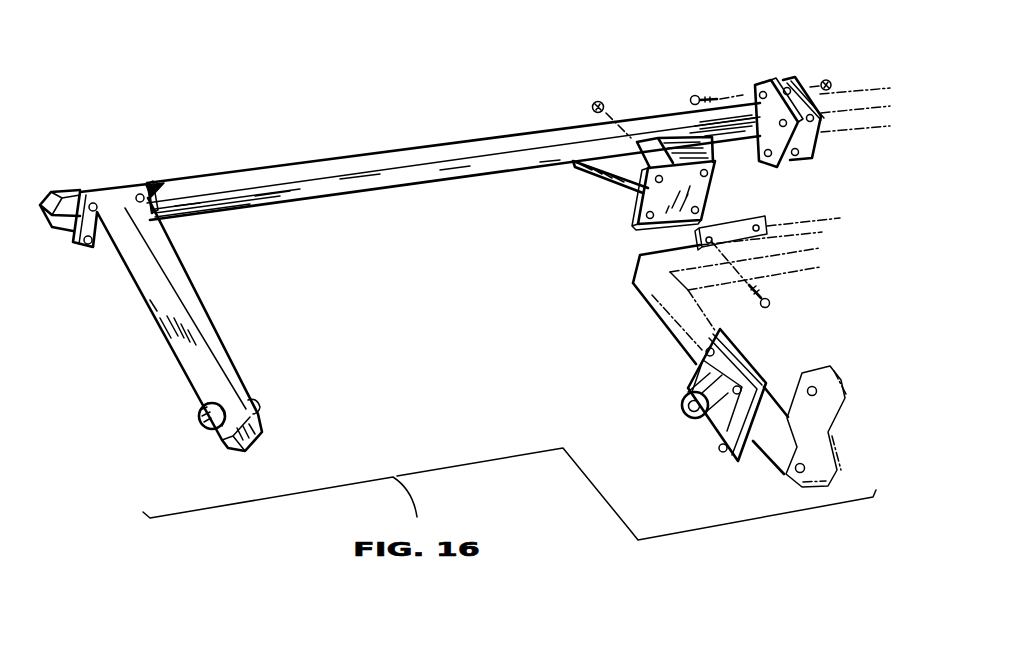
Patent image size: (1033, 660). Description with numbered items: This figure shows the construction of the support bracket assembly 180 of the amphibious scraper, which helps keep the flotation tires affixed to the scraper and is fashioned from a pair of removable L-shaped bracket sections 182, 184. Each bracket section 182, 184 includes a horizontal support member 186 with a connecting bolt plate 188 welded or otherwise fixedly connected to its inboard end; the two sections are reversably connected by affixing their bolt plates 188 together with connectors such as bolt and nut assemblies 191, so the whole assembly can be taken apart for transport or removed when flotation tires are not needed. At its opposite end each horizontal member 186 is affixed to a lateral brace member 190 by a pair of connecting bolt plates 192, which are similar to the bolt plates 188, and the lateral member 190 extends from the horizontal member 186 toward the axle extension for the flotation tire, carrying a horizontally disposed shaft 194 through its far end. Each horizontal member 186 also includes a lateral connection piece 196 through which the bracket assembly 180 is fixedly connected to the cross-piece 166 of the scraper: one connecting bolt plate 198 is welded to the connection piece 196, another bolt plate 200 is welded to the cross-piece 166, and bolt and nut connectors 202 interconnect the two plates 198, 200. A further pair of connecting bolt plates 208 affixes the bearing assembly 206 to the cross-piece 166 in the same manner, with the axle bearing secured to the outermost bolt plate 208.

The cross-piece 166 is at (775, 264).
The support bracket assembly 180 is at (486, 132).
The L-shaped bracket section 182 is at (427, 146).
The L-shaped bracket section 184 is at (840, 88).
The horizontal support member 186 is at (352, 163).
The connecting bolt plate 188 is at (759, 88).
The lateral brace member 190 is at (183, 296).
The bolt and nut assembly 191 is at (691, 96).
The connecting bolt plate 192 is at (109, 185).
The horizontally disposed shaft 194 is at (260, 406).
The lateral connection piece 196 is at (643, 142).
The connecting bolt plate 198 is at (642, 208).
The connecting bolt plate 200 is at (760, 213).
The bolt and nut connector 202 is at (769, 307).
The bearing assembly 206 is at (710, 439).
The connecting bolt plate 208 is at (697, 363).